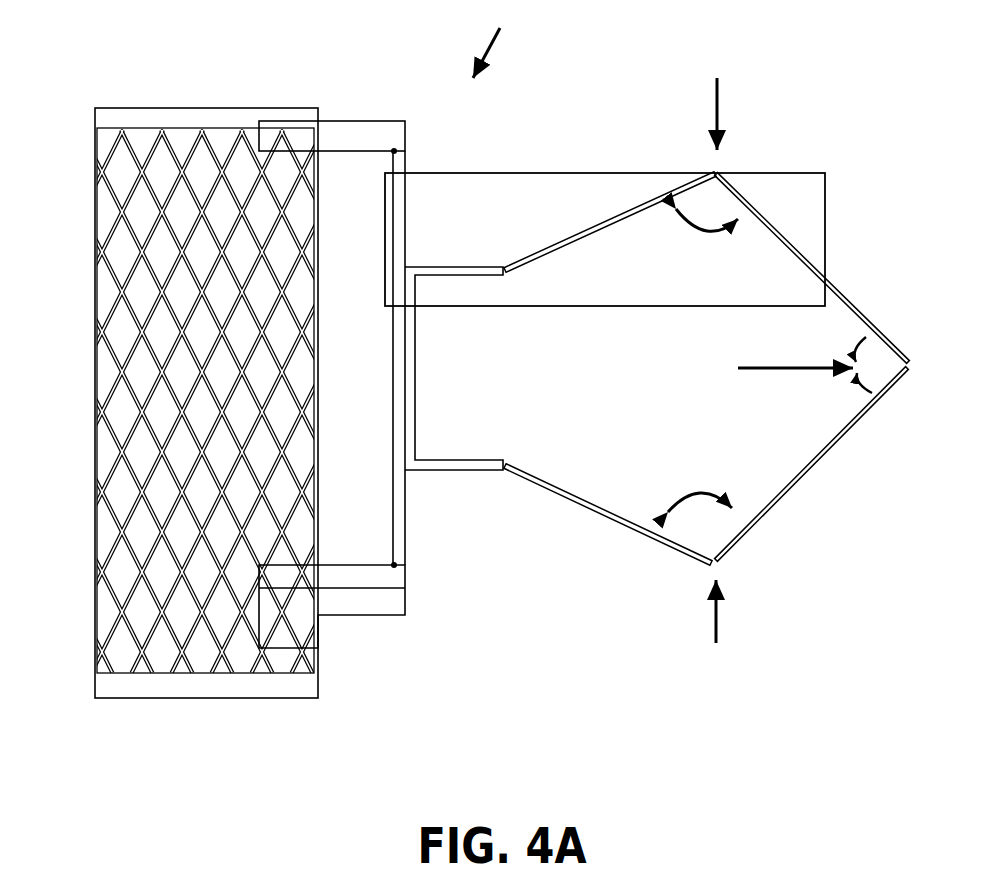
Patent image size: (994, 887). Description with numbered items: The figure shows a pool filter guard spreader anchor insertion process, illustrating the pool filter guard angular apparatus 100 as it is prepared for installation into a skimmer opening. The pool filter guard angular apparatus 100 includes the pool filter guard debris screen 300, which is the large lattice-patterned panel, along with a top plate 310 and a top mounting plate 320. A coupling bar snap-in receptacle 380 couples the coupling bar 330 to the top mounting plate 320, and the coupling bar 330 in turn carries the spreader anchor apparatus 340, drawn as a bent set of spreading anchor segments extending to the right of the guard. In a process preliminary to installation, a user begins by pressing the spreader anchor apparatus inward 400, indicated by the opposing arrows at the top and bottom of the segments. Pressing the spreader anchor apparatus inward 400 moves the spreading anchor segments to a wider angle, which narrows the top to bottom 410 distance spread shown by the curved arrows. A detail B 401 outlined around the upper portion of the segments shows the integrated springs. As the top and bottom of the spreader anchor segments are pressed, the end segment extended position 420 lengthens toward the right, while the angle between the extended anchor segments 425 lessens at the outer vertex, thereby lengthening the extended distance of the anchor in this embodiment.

The pool filter guard angular apparatus 100 is at (496, 41).
The pool filter guard debris screen 300 is at (100, 426).
The top plate 310 is at (187, 120).
The top mounting plate 320 is at (360, 122).
The coupling bar 330 is at (398, 522).
The spreader anchor apparatus 340 is at (807, 480).
The coupling bar snap-in receptacle 380 is at (397, 151).
The pressing the spreader anchor apparatus inward 400 is at (720, 120).
The detail B 401 is at (825, 212).
The top to bottom distance spread 410 is at (645, 208).
The end segment extended position 420 is at (770, 362).
The angle between extended anchor segments 425 is at (910, 358).